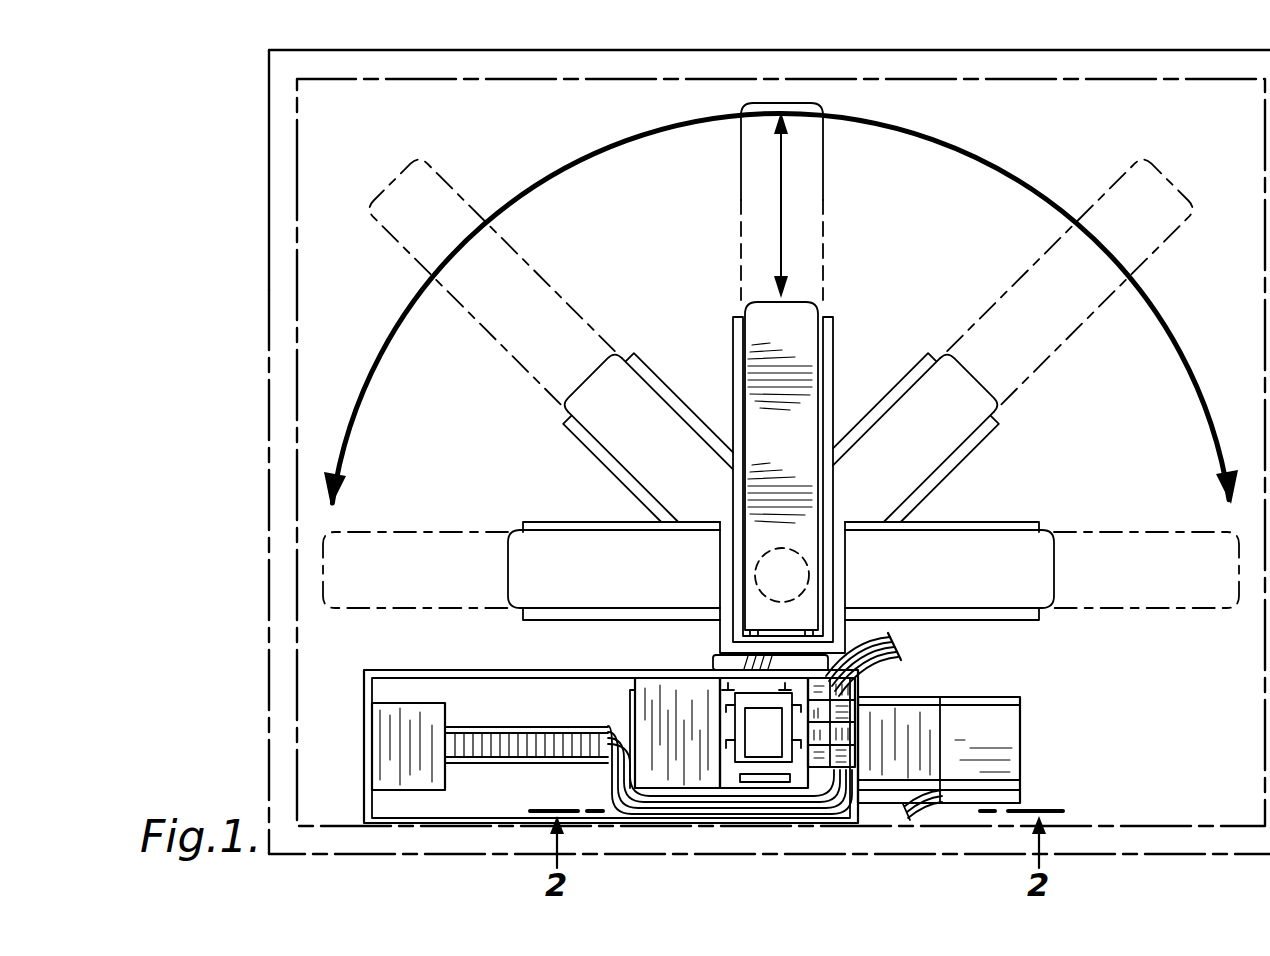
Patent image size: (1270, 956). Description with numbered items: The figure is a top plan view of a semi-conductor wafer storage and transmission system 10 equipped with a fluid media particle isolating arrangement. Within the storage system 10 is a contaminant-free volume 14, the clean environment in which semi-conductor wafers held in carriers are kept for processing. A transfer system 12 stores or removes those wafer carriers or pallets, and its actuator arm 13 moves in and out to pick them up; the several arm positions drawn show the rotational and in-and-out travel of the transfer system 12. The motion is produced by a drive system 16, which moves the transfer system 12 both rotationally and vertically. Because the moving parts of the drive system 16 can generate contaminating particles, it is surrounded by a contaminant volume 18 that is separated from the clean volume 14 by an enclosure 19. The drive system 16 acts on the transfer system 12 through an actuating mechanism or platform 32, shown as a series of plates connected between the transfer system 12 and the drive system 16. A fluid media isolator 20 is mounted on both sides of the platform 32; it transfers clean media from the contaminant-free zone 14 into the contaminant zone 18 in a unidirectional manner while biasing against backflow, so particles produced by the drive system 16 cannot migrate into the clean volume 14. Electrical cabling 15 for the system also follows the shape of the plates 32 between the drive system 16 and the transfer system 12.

The wafer storage and transmission system 10 is at (262, 259).
The transfer system 12 is at (845, 348).
The actuator arm 13 is at (825, 247).
The contaminant-free volume 14 is at (502, 477).
The electrical cabling 15 is at (900, 647).
The drive system 16 is at (667, 778).
The contaminant volume 18 is at (494, 801).
The enclosure 19 is at (520, 672).
The fluid media isolator 20 is at (872, 690).
The actuating mechanism or platform 32 is at (712, 660).